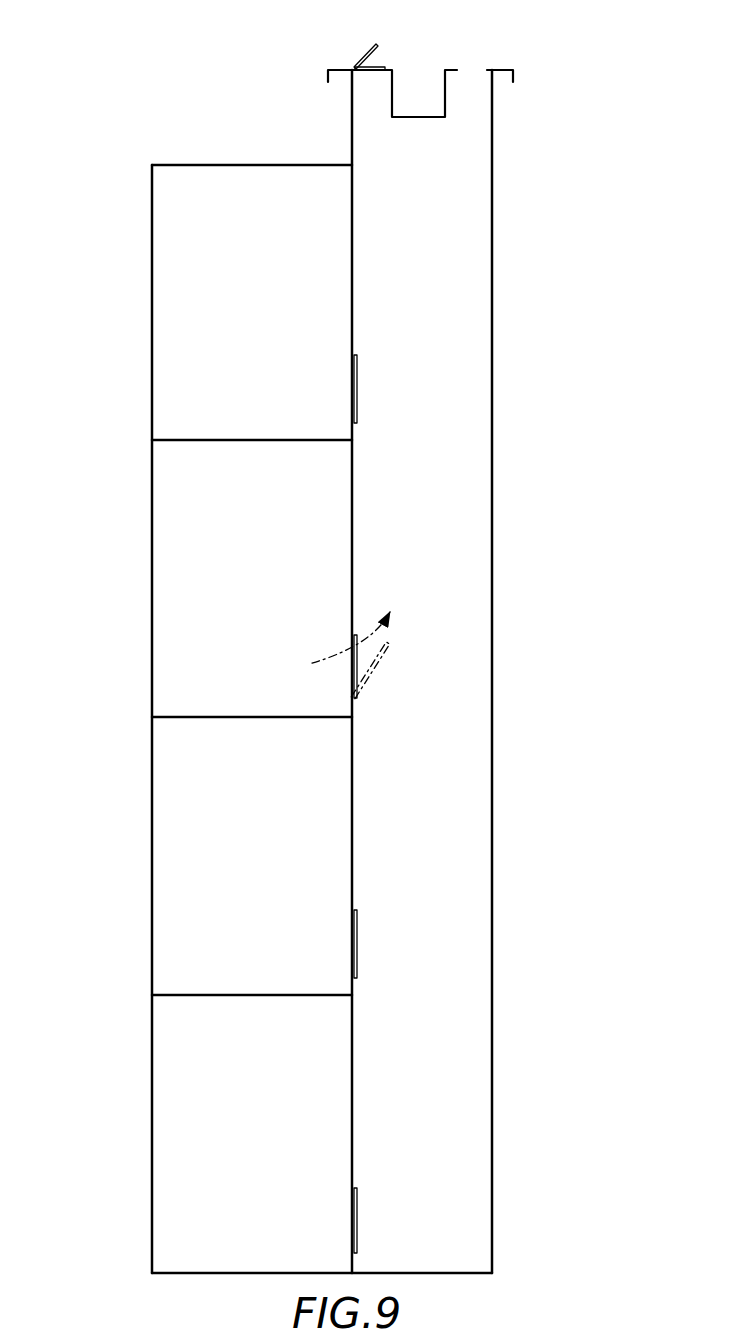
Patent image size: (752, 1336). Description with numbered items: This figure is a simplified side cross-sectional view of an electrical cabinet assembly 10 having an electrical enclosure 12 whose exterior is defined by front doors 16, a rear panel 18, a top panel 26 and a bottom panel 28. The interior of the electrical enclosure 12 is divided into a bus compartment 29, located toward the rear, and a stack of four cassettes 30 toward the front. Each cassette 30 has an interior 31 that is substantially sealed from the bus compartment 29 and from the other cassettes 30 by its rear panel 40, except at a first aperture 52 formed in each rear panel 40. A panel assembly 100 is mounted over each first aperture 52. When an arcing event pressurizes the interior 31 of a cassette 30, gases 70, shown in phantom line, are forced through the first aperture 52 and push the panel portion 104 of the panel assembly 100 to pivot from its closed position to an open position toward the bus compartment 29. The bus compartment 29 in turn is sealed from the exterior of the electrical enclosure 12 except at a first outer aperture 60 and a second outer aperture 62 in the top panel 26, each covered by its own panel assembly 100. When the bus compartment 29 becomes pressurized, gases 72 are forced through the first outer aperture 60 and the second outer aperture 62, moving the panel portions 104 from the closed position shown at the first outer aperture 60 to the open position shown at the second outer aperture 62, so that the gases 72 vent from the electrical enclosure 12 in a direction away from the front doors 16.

The electrical cabinet assembly 10 is at (580, 104).
The electrical enclosure 12 is at (152, 163).
The door 16 is at (152, 233).
The rear panel 18 is at (492, 936).
The top panel 26 is at (490, 68).
The bottom panel 28 is at (190, 1277).
The bus compartment 29 is at (468, 481).
The cassette 30 is at (149, 382).
The interior 31 is at (168, 316).
The rear panel 40 is at (352, 213).
The first aperture 52 is at (349, 384).
The first outer aperture 60 is at (371, 82).
The second outer aperture 62 is at (477, 84).
The gases 70 is at (370, 602).
The gases 72 is at (463, 90).
The panel assembly 100 is at (378, 66).
The panel portion 104 is at (378, 661).